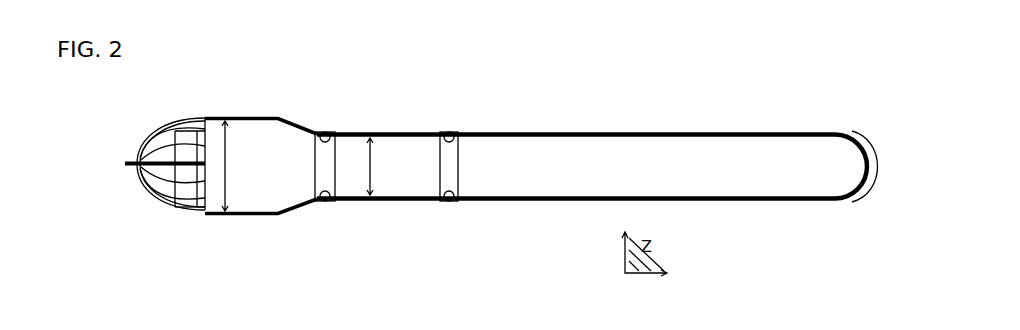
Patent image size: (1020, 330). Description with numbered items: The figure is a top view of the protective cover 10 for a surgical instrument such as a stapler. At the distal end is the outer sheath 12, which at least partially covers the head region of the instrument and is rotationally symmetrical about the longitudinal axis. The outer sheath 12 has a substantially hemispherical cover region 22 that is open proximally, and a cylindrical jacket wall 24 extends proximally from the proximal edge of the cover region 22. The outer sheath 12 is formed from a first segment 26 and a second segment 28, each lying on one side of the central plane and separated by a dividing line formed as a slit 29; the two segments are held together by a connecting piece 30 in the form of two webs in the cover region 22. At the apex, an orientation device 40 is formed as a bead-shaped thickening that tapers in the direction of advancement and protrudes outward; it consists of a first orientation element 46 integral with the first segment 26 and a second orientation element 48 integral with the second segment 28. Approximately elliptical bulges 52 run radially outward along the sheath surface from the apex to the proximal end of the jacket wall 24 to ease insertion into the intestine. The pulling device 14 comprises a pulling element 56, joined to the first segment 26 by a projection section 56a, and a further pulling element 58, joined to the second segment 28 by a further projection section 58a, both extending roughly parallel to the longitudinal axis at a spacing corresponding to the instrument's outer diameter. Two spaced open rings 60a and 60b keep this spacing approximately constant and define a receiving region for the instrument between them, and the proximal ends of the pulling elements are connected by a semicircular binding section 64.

The protective cover 10 is at (430, 243).
The outer sheath 12 is at (148, 209).
The pulling device 14 is at (702, 115).
The cover region 22 is at (160, 119).
The jacket wall 24 is at (192, 118).
The first segment 26 is at (168, 222).
The second segment 28 is at (152, 143).
The slit 29 is at (223, 125).
The connecting piece 30 is at (143, 194).
The orientation device 40 is at (124, 171).
The first orientation element 46 is at (140, 181).
The second orientation element 48 is at (128, 163).
The elliptical bulges 52 is at (188, 215).
The pulling element 56 is at (527, 203).
The projection section 56a is at (263, 218).
The further pulling element 58 is at (522, 130).
The further projection section 58a is at (262, 116).
The open ring 60a is at (325, 128).
The open ring 60b is at (450, 128).
The semicircular binding section 64 is at (868, 128).